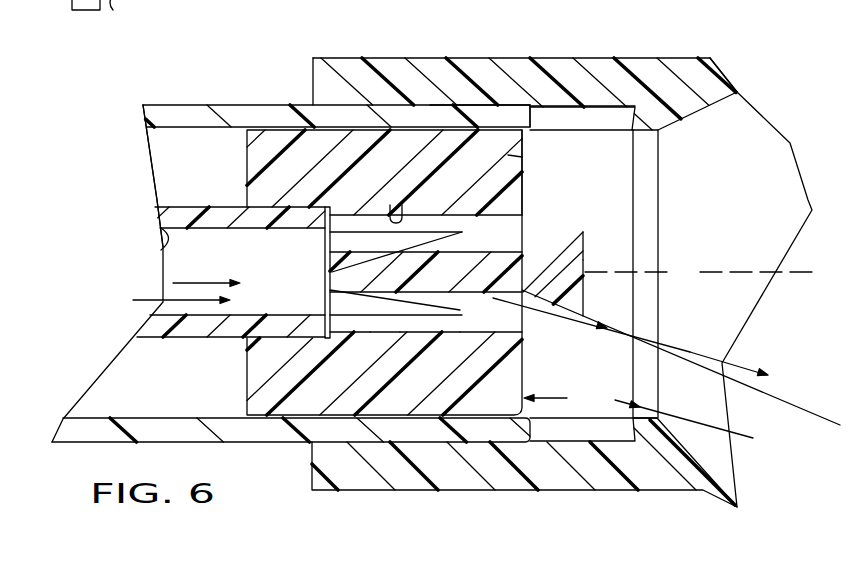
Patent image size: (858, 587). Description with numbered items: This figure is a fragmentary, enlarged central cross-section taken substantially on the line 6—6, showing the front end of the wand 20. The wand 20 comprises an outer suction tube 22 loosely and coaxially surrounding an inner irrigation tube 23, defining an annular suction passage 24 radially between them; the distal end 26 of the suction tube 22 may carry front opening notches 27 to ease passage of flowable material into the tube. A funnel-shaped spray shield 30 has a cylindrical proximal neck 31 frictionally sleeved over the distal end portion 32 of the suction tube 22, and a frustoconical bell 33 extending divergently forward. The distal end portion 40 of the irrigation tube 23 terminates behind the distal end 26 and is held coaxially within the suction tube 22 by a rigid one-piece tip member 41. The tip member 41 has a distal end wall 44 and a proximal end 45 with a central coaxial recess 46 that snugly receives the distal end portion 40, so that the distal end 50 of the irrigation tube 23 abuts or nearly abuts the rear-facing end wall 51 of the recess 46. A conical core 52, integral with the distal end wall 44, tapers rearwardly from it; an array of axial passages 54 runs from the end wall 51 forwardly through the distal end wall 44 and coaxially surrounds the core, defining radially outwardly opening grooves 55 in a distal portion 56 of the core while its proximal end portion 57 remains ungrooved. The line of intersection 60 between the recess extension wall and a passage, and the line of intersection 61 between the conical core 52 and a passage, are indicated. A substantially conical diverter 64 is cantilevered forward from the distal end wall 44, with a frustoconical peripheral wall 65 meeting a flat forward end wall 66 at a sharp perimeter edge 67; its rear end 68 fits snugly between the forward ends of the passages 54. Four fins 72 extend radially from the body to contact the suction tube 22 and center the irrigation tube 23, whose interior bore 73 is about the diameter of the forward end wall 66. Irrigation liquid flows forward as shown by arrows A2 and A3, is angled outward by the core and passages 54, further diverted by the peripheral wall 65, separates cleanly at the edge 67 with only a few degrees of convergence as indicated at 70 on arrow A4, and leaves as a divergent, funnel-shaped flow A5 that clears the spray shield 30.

The section line 6 is at (85, 10).
The wand 20 is at (206, 92).
The suction tube 22 is at (172, 106).
The irrigation tube 23 is at (157, 328).
The annular suction passage 24 is at (157, 128).
The distal end of suction tube 26 is at (532, 118).
The front opening notches 27 is at (563, 121).
The spray shield 30 is at (646, 56).
The proximal neck 31 is at (607, 77).
The distal end portion of suction tube 32 is at (438, 117).
The frustoconical bell 33 is at (720, 69).
The distal end portion of irrigation tube 40 is at (268, 205).
The tip member 41 is at (236, 156).
The distal end wall 44 is at (525, 203).
The proximal end of tip member 45 is at (160, 204).
The recess 46 is at (248, 228).
The distal end of irrigation tube 50 is at (345, 212).
The end wall of recess 51 is at (400, 318).
The conical core 52 is at (392, 205).
The passages 54 is at (410, 212).
The grooves 55 is at (468, 334).
The distal portion of conical core 56 is at (412, 334).
The proximal end portion of conical core 57 is at (378, 250).
The line of intersection 60 is at (340, 334).
The line of intersection 61 is at (385, 334).
The diverter 64 is at (672, 352).
The frustoconical peripheral wall 65 is at (585, 232).
The forward end wall 66 is at (573, 266).
The perimeter edge 67 is at (585, 236).
The rear end of diverter 68 is at (525, 252).
The flow separation portion 70 is at (572, 322).
The fins 72 is at (508, 155).
The interior bore 73 is at (160, 245).
The irrigation flow arrow A2 is at (193, 303).
The irrigation flow arrow A3 is at (253, 292).
The irrigation flow arrow A4 is at (588, 335).
The irrigation flow arrow A5 is at (737, 363).